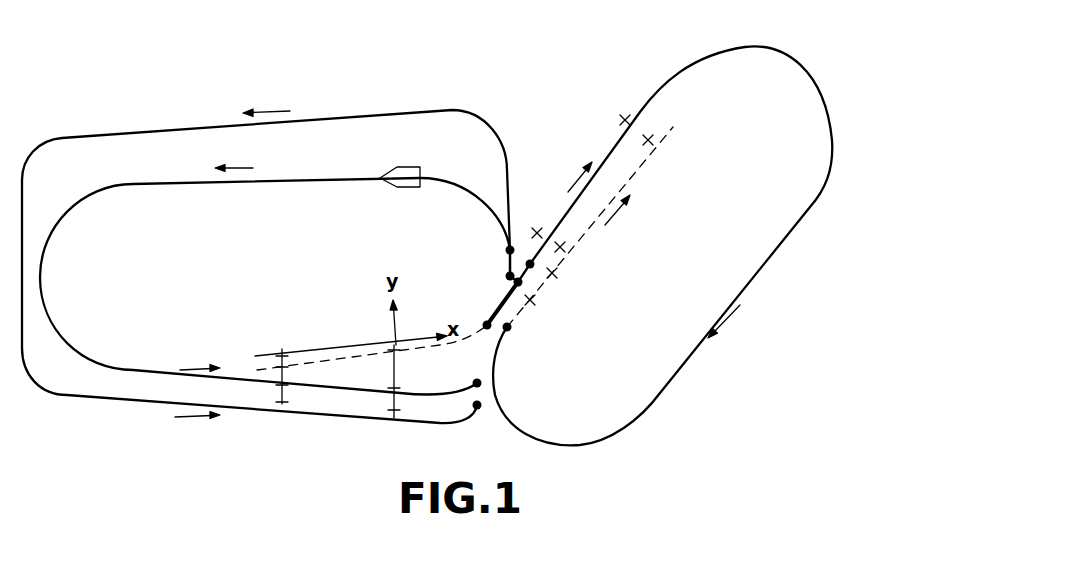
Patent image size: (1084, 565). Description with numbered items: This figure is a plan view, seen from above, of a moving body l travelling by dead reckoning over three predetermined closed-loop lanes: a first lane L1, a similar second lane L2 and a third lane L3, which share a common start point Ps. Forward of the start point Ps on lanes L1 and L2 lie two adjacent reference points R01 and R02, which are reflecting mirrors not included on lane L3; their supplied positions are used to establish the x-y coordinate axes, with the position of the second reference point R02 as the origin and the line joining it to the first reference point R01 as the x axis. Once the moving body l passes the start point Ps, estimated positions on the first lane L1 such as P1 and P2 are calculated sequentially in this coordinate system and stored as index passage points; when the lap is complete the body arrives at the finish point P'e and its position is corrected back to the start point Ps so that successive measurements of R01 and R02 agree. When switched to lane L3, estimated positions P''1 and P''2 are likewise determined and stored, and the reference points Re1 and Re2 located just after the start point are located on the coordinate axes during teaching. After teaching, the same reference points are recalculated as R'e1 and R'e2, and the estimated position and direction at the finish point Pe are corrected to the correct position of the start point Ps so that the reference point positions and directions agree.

The first lane L1 is at (163, 183).
The second lane L2 is at (102, 136).
The third lane L3 is at (757, 50).
The moving body l is at (408, 165).
The first estimated position on lane L1 P1 is at (506, 276).
The second estimated position on lane L1 P2 is at (506, 249).
The start point Ps is at (486, 324).
The finish point on lane L3 Pe is at (508, 330).
The finish point on lane L1 P'e is at (479, 417).
The first estimated position on lane L3 P''1 is at (555, 312).
The second estimated position on lane L3 P''2 is at (578, 283).
The reference point on lane L3 during teaching Re1 is at (535, 228).
The second reference point on lane L3 during teaching Re2 is at (623, 115).
The recalculated first reference point on lane L3 R'e1 is at (649, 251).
The recalculated second reference point on lane L3 R'e2 is at (728, 155).
The first reference point R01 is at (282, 350).
The second reference point R02 is at (393, 342).